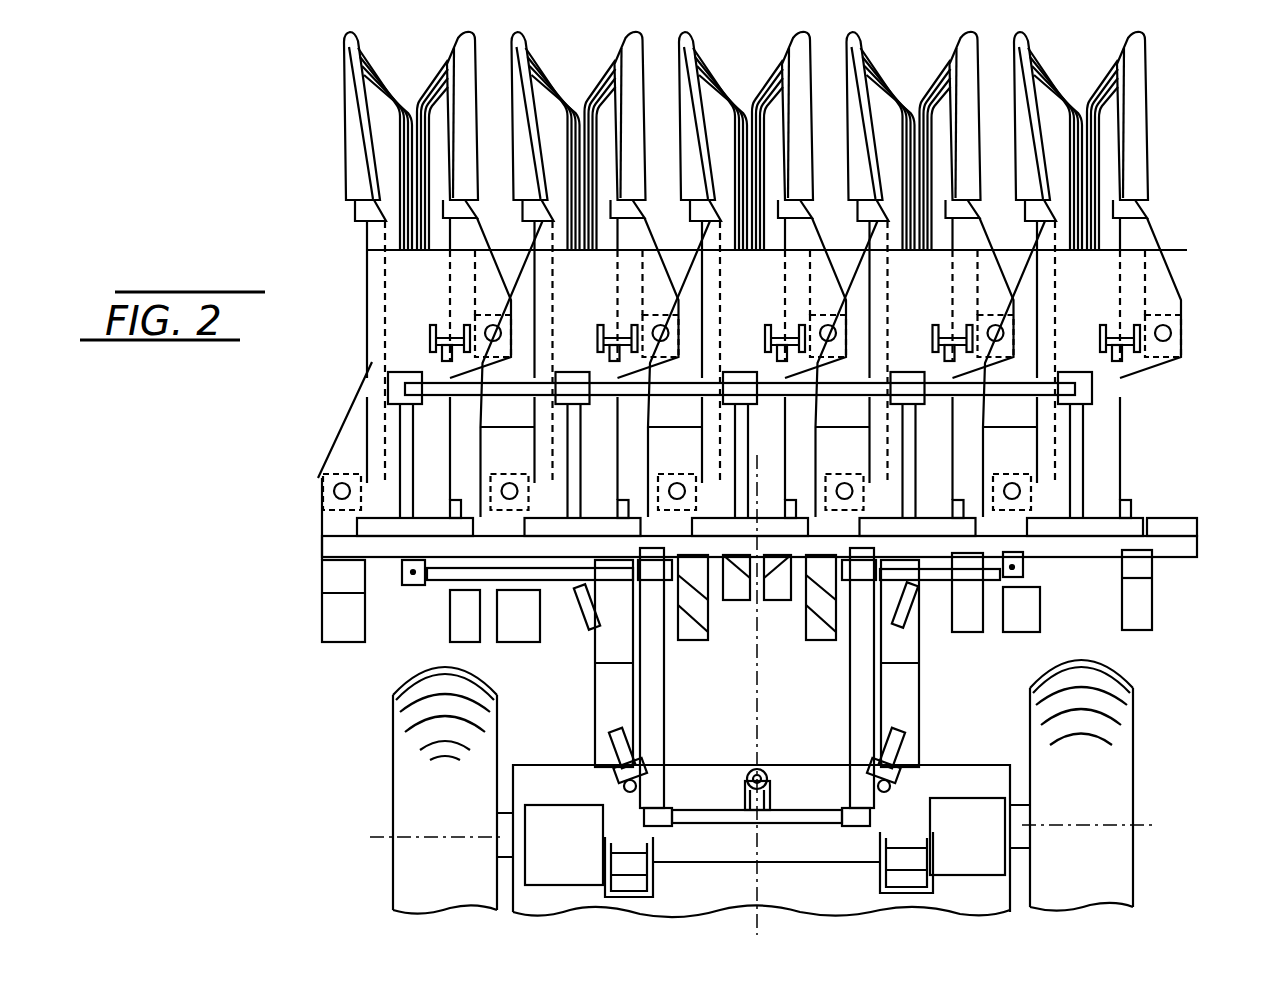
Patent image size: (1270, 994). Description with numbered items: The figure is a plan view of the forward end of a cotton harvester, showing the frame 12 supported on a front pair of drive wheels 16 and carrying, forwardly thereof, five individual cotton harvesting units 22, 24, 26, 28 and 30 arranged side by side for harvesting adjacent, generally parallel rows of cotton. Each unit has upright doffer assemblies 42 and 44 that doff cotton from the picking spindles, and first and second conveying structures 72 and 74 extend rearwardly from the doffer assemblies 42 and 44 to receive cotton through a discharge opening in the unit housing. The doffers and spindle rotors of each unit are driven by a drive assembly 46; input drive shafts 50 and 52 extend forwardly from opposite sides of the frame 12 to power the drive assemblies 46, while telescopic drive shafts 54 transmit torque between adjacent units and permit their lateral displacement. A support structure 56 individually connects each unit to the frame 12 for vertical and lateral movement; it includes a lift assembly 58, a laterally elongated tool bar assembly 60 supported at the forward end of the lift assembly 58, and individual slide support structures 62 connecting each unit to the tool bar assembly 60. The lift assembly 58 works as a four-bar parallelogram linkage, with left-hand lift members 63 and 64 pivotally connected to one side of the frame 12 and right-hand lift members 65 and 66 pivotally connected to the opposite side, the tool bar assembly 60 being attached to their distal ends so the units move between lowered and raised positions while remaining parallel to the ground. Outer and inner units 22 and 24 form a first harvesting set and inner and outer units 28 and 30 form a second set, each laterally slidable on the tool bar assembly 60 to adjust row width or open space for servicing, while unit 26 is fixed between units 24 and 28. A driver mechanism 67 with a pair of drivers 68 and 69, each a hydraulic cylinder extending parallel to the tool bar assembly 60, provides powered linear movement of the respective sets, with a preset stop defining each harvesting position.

The frame 12 is at (524, 770).
The drive wheels 16 is at (397, 797).
The harvesting unit 22 is at (365, 268).
The harvesting unit 24 is at (528, 252).
The harvesting unit 26 is at (695, 250).
The harvesting unit 28 is at (862, 250).
The harvesting unit 30 is at (1030, 250).
The doffer assembly 42 is at (493, 325).
The doffer assembly 44 is at (333, 490).
The drive assembly 46 is at (386, 390).
The input drive shaft 50 is at (612, 760).
The input drive shaft 52 is at (902, 760).
The telescopic drive shafts 54 is at (522, 382).
The support structure 56 is at (318, 548).
The lift assembly 58 is at (594, 722).
The tool bar assembly 60 is at (1188, 516).
The slide support structures 62 is at (354, 526).
The left-hand lift member 63 is at (594, 680).
The left-hand lift member 64 is at (666, 727).
The right-hand lift member 65 is at (920, 700).
The right-hand lift member 66 is at (851, 727).
The driver mechanism 67 is at (462, 600).
The driver 68 is at (440, 580).
The driver 69 is at (990, 578).
The first conveying structure 72 is at (447, 643).
The second conveying structure 74 is at (320, 604).